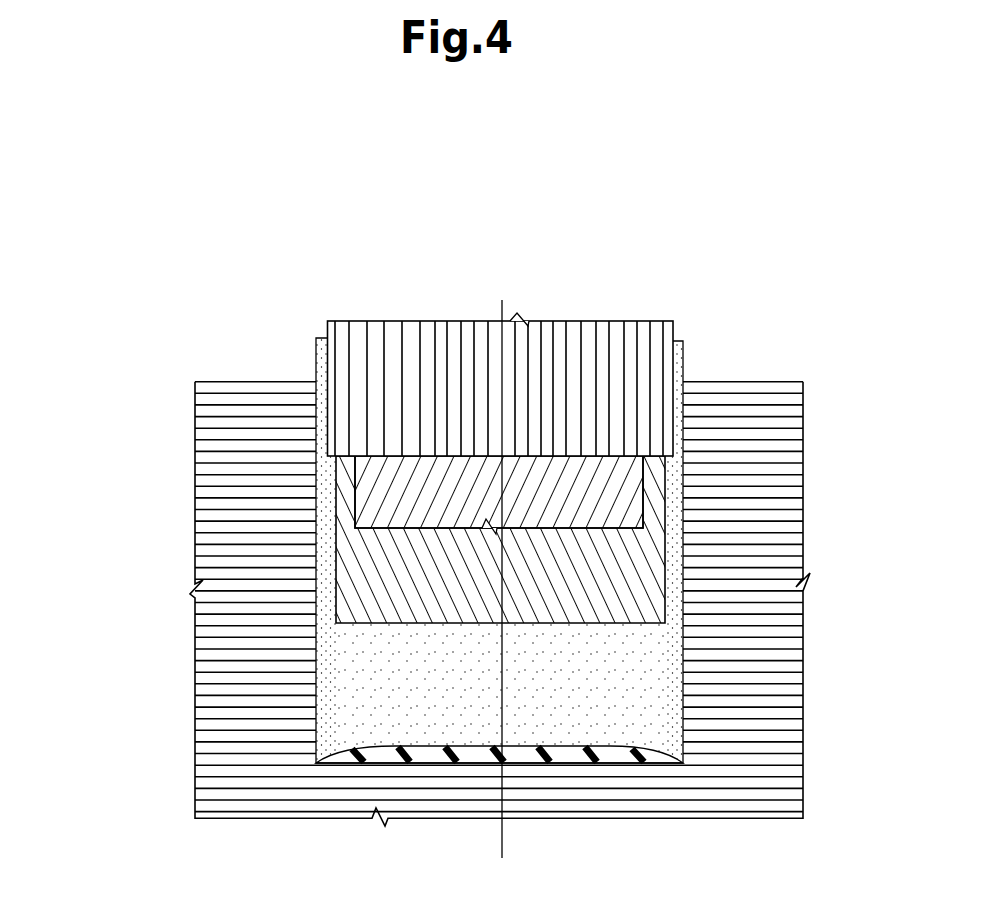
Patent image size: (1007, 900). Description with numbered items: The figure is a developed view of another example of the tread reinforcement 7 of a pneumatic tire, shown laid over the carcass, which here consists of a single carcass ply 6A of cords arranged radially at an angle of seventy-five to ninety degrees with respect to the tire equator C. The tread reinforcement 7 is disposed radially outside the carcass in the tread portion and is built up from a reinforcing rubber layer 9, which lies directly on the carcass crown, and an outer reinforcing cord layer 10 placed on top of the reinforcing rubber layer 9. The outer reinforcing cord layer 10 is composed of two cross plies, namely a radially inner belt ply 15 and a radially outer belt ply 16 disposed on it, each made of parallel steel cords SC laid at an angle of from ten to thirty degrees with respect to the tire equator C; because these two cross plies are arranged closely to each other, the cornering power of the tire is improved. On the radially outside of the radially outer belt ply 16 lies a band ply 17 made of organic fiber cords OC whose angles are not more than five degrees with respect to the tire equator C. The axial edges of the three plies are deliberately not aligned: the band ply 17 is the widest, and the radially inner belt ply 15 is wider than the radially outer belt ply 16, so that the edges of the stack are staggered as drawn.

The carcass ply 6A is at (223, 390).
The tread reinforcement 7 is at (73, 475).
The reinforcing rubber layer 9 is at (328, 652).
The outer reinforcing cord layer 10 is at (114, 428).
The radially inner belt ply 15 is at (340, 568).
The radially outer belt ply 16 is at (390, 492).
The band ply 17 is at (350, 400).
The organic fiber cords OC is at (647, 360).
The steel cords SC is at (593, 490).
The tire equator C is at (502, 596).